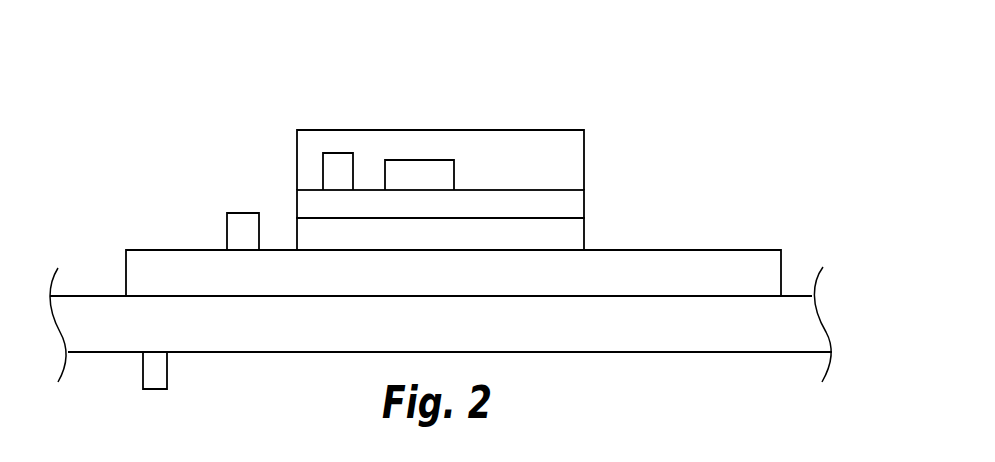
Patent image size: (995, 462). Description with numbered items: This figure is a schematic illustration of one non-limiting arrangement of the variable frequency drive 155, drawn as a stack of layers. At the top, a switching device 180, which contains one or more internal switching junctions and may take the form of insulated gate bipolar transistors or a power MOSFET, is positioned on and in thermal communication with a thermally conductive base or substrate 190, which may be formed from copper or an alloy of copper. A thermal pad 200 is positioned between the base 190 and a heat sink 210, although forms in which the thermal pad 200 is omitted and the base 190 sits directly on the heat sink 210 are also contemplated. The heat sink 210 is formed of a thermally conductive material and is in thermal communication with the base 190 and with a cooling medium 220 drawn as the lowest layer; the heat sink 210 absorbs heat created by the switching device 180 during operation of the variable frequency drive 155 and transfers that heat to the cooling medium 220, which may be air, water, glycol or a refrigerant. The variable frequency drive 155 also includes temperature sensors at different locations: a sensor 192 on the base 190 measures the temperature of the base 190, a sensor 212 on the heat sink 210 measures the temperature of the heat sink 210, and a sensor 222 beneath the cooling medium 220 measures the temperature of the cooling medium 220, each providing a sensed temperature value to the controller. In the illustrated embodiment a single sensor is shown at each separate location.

The variable frequency drive 155 is at (243, 92).
The switching device 180 is at (418, 175).
The base 190 is at (455, 216).
The sensor 192 is at (322, 167).
The thermal pad 200 is at (455, 246).
The heat sink 210 is at (455, 285).
The sensor 212 is at (227, 228).
The cooling medium 220 is at (455, 328).
The sensor 222 is at (167, 373).